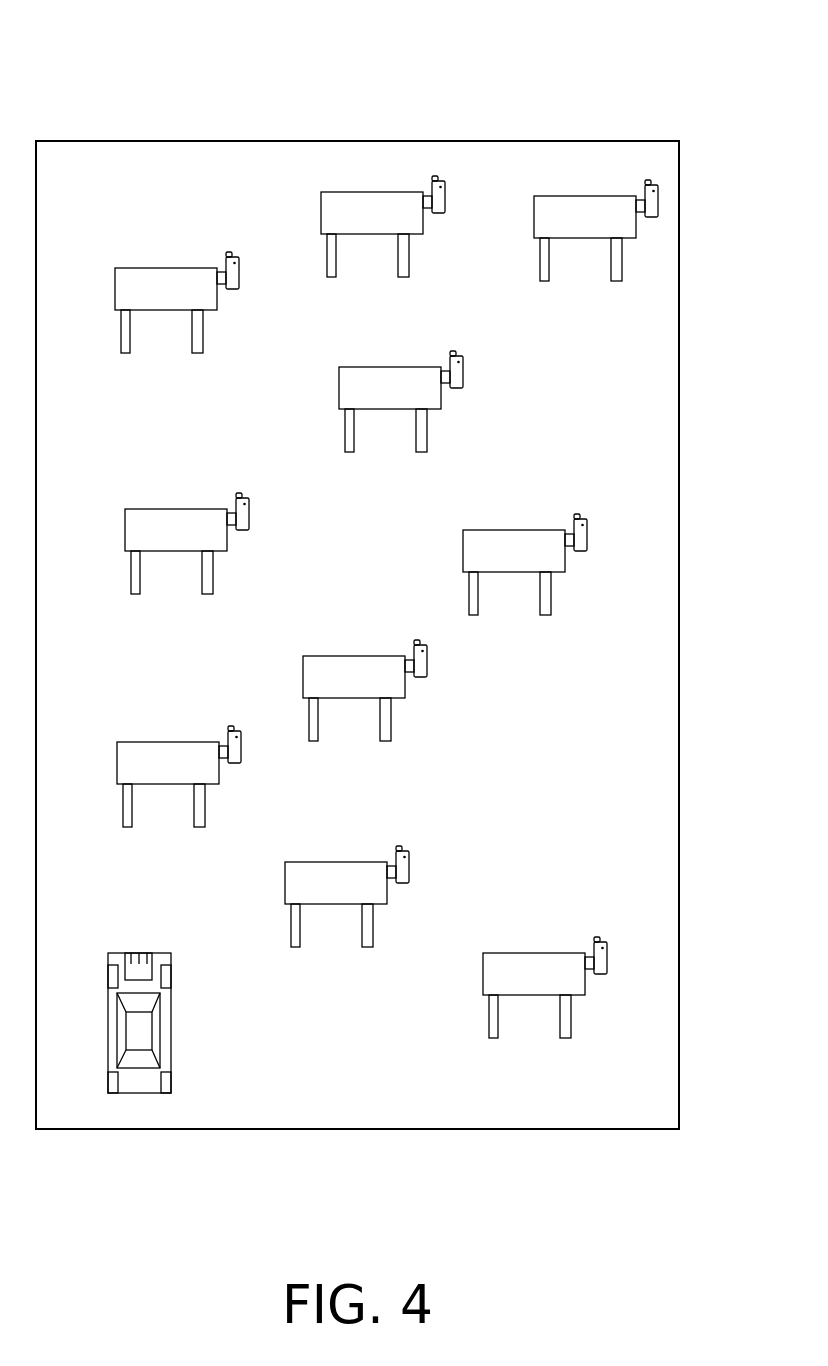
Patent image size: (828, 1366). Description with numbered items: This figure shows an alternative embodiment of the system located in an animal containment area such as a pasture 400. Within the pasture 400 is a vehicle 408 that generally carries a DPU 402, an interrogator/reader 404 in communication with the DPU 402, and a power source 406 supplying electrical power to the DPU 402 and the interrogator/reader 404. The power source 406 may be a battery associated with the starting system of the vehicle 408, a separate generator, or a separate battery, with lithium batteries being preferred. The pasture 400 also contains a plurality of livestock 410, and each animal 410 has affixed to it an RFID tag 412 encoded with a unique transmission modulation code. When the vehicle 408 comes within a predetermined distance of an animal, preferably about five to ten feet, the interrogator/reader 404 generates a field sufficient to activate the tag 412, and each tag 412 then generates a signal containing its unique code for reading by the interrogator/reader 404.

The pasture 400 is at (323, 102).
The DPU 402 is at (131, 962).
The interrogator/reader 404 is at (139, 962).
The power source 406 is at (148, 962).
The vehicle 408 is at (190, 1024).
The livestock 410 is at (375, 615).
The RFID tag 412 is at (218, 280).